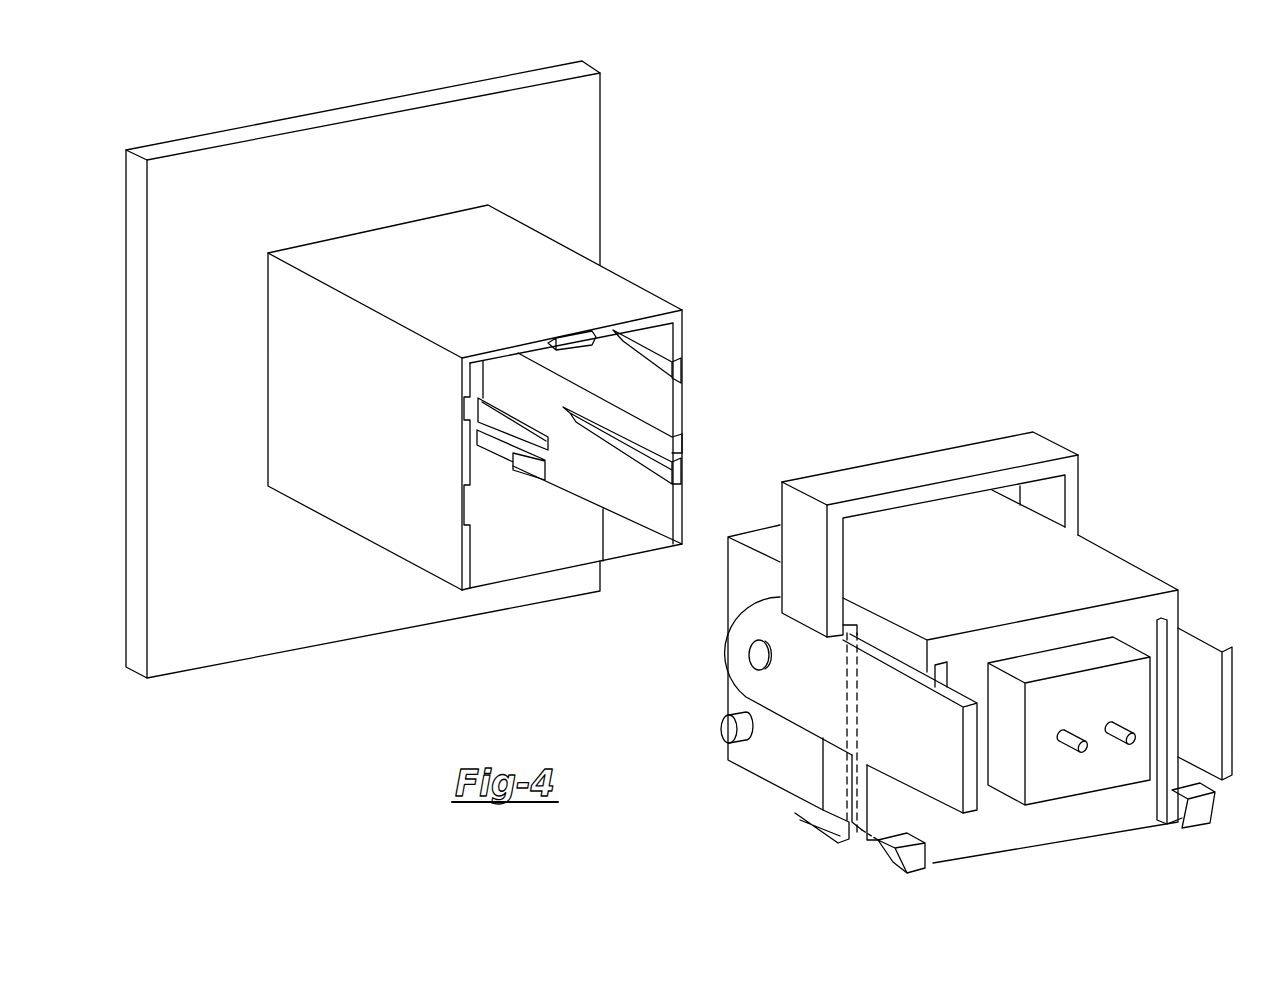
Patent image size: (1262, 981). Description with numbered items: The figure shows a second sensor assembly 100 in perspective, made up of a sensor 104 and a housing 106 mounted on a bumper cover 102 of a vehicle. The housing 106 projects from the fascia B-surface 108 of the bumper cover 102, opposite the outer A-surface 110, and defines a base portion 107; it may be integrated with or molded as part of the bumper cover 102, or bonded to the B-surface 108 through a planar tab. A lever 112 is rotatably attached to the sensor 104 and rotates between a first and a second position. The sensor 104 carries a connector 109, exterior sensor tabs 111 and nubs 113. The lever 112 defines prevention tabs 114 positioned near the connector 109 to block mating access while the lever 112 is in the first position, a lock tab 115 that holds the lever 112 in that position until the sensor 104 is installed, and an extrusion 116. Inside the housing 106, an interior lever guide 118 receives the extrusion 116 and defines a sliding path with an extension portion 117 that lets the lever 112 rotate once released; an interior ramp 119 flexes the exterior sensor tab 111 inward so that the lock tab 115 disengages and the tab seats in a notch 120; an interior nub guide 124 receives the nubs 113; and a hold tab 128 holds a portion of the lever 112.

The second sensor assembly 100 is at (700, 134).
The bumper cover 102 is at (341, 369).
The sensor 104 is at (973, 660).
The housing 106 is at (473, 394).
The base portion 107 is at (310, 242).
The fascia B-surface 108 is at (263, 160).
The connector 109 is at (1090, 770).
The A-surface 110 is at (125, 303).
The exterior sensor tab 111 is at (918, 863).
The lever 112 is at (823, 484).
The nub 113 is at (742, 726).
The prevention tab 114 is at (948, 792).
The lock tab 115 is at (878, 840).
The extrusion 116 is at (800, 818).
The extension portion 117 is at (538, 432).
The interior lever guide 118 is at (682, 468).
The interior ramp 119 is at (520, 468).
The notch 120 is at (475, 425).
The interior nub guide 124 is at (680, 370).
The hold tab 128 is at (585, 340).